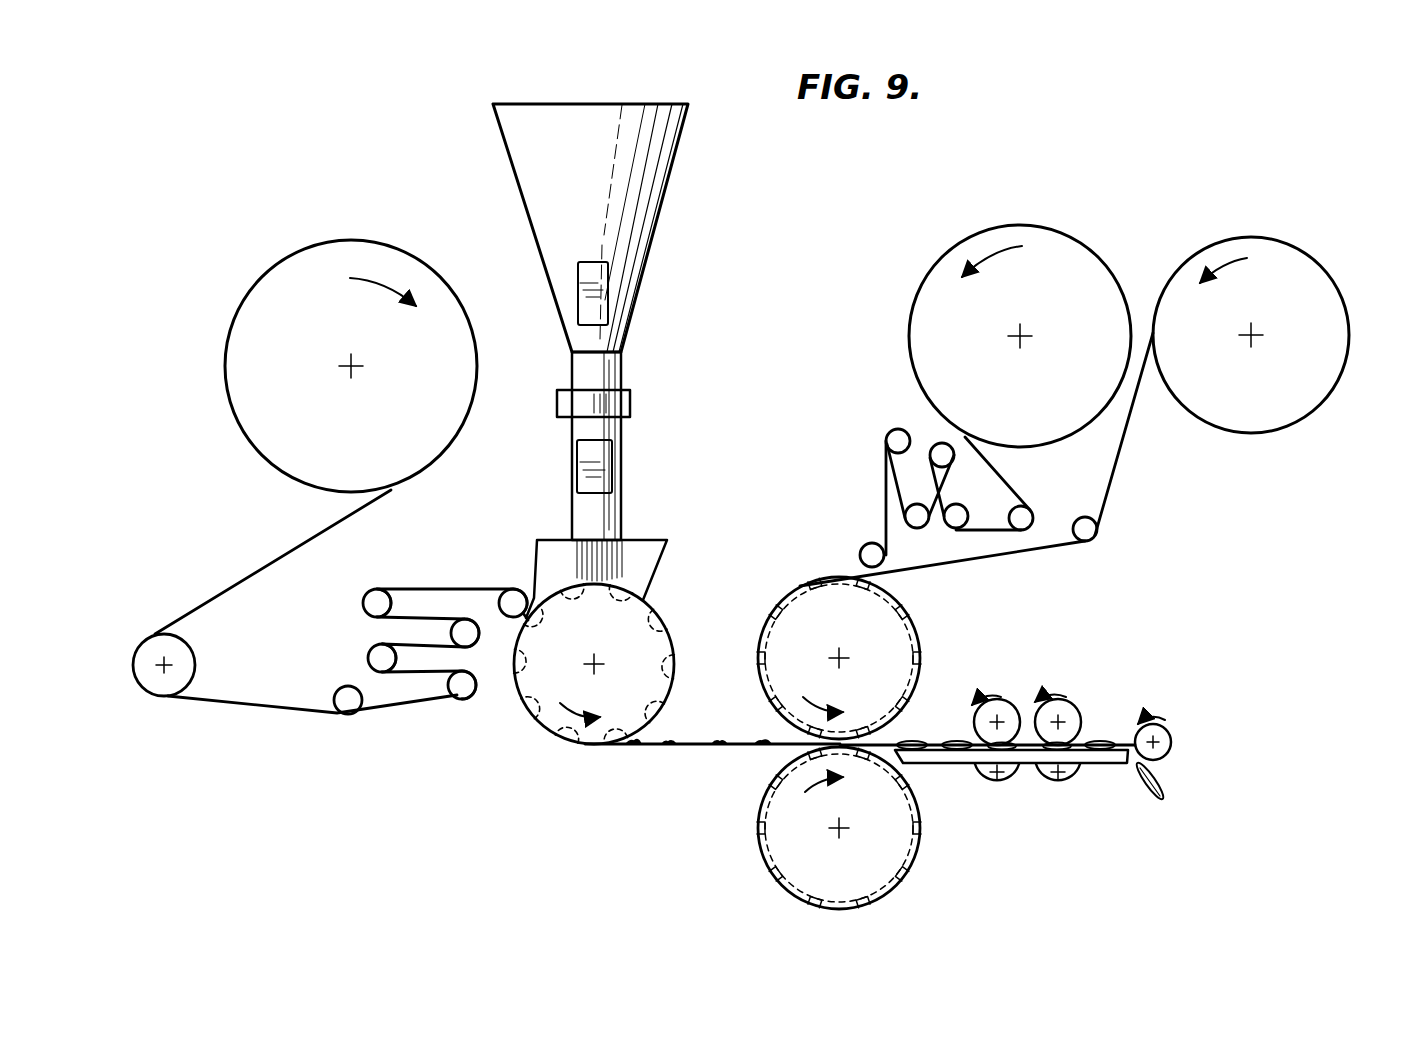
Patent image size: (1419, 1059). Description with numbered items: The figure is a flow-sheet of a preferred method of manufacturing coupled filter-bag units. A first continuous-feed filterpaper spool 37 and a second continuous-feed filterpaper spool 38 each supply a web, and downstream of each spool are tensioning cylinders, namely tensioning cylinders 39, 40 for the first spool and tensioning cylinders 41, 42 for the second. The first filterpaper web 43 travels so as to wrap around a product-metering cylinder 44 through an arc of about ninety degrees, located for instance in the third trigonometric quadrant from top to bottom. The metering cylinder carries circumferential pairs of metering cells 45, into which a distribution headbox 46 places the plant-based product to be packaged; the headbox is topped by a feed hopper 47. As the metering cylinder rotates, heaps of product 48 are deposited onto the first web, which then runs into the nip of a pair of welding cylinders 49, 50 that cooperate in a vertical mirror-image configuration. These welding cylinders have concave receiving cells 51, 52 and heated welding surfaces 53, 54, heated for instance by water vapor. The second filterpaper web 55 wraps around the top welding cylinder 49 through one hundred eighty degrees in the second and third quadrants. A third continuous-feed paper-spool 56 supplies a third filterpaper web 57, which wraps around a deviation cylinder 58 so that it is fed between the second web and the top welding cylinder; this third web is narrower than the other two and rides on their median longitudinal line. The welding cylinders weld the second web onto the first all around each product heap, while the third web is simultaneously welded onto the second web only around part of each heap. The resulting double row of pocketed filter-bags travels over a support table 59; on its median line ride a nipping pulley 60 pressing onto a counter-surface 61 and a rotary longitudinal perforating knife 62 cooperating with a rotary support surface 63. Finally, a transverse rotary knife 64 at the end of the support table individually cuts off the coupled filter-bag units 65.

The first continuous-feed filterpaper spool 37 is at (302, 267).
The second continuous-feed filterpaper spool 38 is at (1040, 240).
The tensioning cylinder 39 is at (153, 640).
The tensioning cylinder 40 is at (462, 692).
The tensioning cylinder 41 is at (1025, 518).
The tensioning cylinder 42 is at (893, 436).
The first filterpaper web 43 is at (238, 703).
The product-metering cylinder 44 is at (650, 603).
The metering cells 45 is at (674, 661).
The distribution headbox 46 is at (655, 568).
The feed hopper 47 is at (612, 368).
The heaps of product 48 is at (663, 742).
The top welding cylinder 49 is at (873, 620).
The bottom welding cylinder 50 is at (798, 855).
The concave receiving cell 51 is at (921, 652).
The concave receiving cell 52 is at (910, 867).
The heated welding surface 53 is at (915, 687).
The heated welding surface 54 is at (921, 823).
The second filterpaper web 55 is at (880, 497).
The third continuous-feed paper-spool 56 is at (1277, 277).
The third filterpaper web 57 is at (1122, 450).
The deviation cylinder 58 is at (1093, 536).
The support table 59 is at (1106, 762).
The nipping pulley 60 is at (1005, 703).
The counter-surface 61 is at (1000, 788).
The rotary longitudinal perforating knife 62 is at (1070, 703).
The rotary support surface 63 is at (1068, 788).
The transverse rotary knife 64 is at (1165, 733).
The coupled filter-bag units 65 is at (1162, 787).